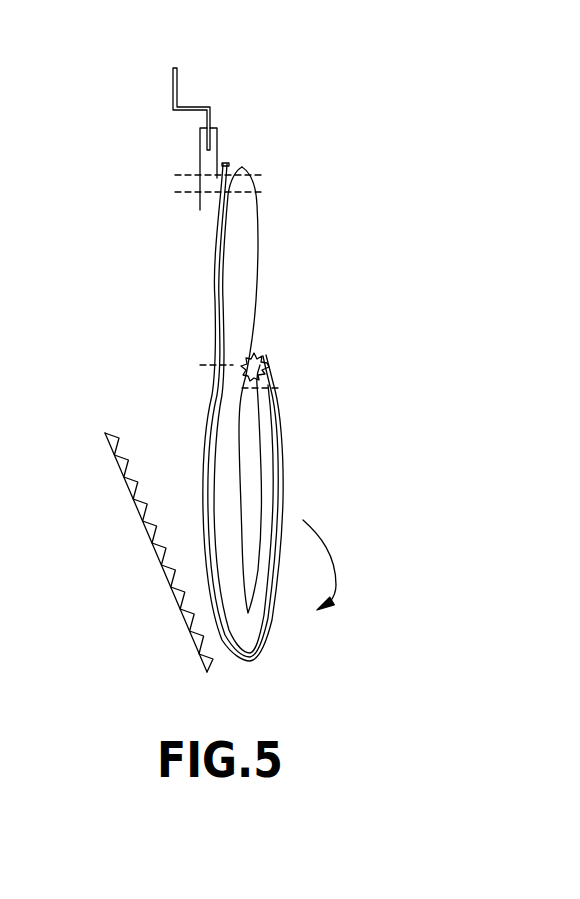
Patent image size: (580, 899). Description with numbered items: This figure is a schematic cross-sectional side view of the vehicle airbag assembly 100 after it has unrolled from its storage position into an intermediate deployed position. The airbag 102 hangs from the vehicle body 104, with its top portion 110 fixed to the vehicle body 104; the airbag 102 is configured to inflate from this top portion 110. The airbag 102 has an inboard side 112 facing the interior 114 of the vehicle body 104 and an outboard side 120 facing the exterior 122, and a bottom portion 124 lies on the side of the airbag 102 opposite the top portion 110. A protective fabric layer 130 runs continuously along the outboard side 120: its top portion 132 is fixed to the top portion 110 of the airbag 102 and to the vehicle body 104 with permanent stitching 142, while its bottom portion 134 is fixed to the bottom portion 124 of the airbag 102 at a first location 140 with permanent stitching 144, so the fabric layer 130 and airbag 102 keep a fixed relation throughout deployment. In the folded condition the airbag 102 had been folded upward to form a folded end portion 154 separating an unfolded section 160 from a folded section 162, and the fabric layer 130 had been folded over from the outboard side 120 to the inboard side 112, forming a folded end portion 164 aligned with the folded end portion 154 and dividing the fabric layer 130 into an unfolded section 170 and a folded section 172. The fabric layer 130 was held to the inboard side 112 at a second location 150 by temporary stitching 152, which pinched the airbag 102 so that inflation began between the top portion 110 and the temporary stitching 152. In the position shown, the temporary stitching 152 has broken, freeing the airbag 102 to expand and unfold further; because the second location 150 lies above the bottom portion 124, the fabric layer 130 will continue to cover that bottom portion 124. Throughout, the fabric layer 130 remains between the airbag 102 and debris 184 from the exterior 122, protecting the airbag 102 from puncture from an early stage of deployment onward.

The vehicle airbag assembly 100 is at (236, 113).
The airbag 102 is at (259, 283).
The vehicle body 104 is at (195, 107).
The top portion 110 is at (250, 185).
The inboard side 112 is at (259, 247).
The interior 114 is at (353, 540).
The outboard side 120 is at (258, 197).
The exterior 122 is at (133, 567).
The bottom portion 124 is at (268, 352).
The protective fabric layer 130 is at (213, 260).
The top portion 132 is at (228, 163).
The bottom portion 134 is at (278, 403).
The first location 140 is at (275, 372).
The fastener (permanent stitching) 142 is at (190, 192).
The fastener (permanent stitching) 144 is at (283, 386).
The second location 150 is at (282, 363).
The fastener (temporary stitching) 152 is at (280, 367).
The folded end portion 154 is at (255, 622).
The unfolded section 160 is at (216, 449).
The folded section 162 is at (270, 478).
The folded end portion 164 is at (263, 658).
The unfolded section 170 is at (215, 405).
The folded section 172 is at (285, 515).
The debris 184 is at (172, 575).